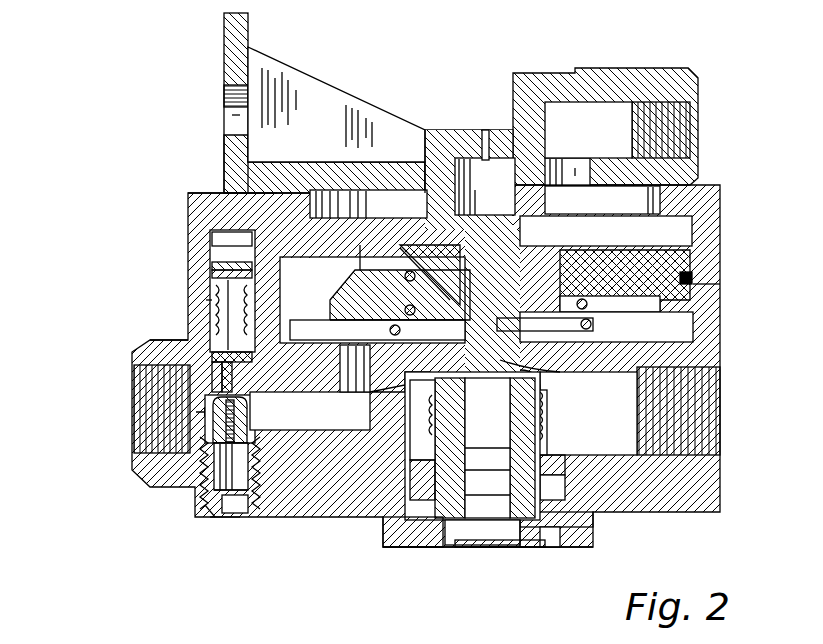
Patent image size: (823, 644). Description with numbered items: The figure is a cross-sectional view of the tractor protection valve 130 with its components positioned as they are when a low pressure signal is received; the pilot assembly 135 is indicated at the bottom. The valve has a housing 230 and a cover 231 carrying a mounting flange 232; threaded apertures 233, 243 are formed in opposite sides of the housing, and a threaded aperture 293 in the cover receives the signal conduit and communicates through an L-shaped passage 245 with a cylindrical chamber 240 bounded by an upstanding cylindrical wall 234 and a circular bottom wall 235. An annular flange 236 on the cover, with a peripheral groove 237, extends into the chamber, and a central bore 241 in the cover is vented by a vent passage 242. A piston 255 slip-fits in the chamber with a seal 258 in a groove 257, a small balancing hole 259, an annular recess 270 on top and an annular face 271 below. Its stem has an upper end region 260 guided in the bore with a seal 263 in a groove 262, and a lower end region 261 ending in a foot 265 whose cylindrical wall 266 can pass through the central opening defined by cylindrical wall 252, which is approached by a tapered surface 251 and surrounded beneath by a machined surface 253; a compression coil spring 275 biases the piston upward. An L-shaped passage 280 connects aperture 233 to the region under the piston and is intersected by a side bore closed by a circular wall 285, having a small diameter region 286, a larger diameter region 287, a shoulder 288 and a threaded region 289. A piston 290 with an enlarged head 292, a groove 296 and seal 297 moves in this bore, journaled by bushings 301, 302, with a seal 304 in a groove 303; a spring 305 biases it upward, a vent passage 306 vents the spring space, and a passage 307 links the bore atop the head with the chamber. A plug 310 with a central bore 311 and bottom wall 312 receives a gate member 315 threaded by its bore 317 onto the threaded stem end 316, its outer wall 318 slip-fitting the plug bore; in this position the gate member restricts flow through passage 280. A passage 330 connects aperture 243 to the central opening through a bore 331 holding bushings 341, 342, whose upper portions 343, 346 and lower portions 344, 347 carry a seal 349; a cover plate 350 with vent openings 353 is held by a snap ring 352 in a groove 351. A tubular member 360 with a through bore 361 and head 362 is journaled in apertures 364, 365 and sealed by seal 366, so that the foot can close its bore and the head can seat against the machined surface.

The tractor protection valve 130 is at (664, 36).
The pilot valve assembly 135 is at (486, 575).
The housing 230 is at (283, 517).
The cover 231 is at (440, 126).
The valve mounting flange 232 is at (236, 56).
The threaded aperture 233 is at (142, 455).
The upstanding cylindrical wall 234 is at (290, 322).
The circular bottom wall 235 is at (397, 327).
The annular flange 236 is at (656, 203).
The peripheral groove 237 is at (278, 192).
The cylindrical chamber 240 is at (406, 214).
The cylindrical bore 241 is at (478, 172).
The vent passage 242 is at (485, 130).
The threaded aperture 243 is at (700, 452).
The L-shaped passage 245 is at (606, 139).
The tapered surface 251 is at (592, 324).
The cylindrical wall 252 is at (565, 392).
The annular machined surface 253 is at (570, 372).
The piston 255 is at (616, 243).
The peripheral groove 257 is at (694, 276).
The resilient seal 258 is at (708, 286).
The small diameter hole 259 is at (395, 248).
The upper stem end region 260 is at (468, 258).
The lower stem end region 261 is at (395, 352).
The peripheral groove 262 is at (528, 240).
The resilient seal 263 is at (480, 192).
The foot 265 is at (415, 360).
The cylindrical peripheral wall 266 is at (560, 398).
The annular recess 270 is at (340, 243).
The annular face 271 is at (375, 300).
The compression coil spring 275 is at (588, 298).
The L-shaped passage 280 is at (356, 421).
The circular wall 285 is at (200, 220).
The small diameter region 286 is at (212, 240).
The larger diameter region 287 is at (215, 358).
The shoulder 288 is at (255, 360).
The threaded lower bore region 289 is at (218, 490).
The piston 290 is at (215, 250).
The enlarged diameter head 292 is at (208, 296).
The threaded aperture 293 is at (678, 152).
The peripheral groove 296 is at (214, 278).
The resilient seal 297 is at (214, 266).
The upper bushing 301 is at (182, 342).
The lower bushing 302 is at (248, 394).
The groove 303 is at (215, 380).
The resilient seal 304 is at (228, 395).
The compression coil spring 305 is at (225, 330).
The vent passage 306 is at (215, 310).
The passage 307 is at (285, 236).
The plug 310 is at (222, 520).
The central bore 311 is at (210, 512).
The circular bottom wall 312 is at (232, 516).
The gate member 315 is at (198, 412).
The threaded stem end region 316 is at (247, 418).
The threaded central bore 317 is at (258, 468).
The cylindrical outer wall 318 is at (210, 455).
The passage 330 is at (604, 410).
The bore 331 is at (420, 548).
The upper bushing 341 is at (566, 463).
The lower bushing 342 is at (566, 490).
The axially extending upper portion 343 is at (548, 432).
The radially extending lower portion 344 is at (412, 476).
The upper portion 346 is at (487, 448).
The lower portion 347 is at (482, 530).
The annular seal 349 is at (383, 520).
The circular cover plate 350 is at (435, 548).
The groove 351 is at (593, 530).
The snap ring 352 is at (560, 545).
The vent openings 353 is at (478, 547).
The tubular member 360 is at (522, 545).
The through bore 361 is at (487, 500).
The large diameter head 362 is at (414, 444).
The central aperture 364 is at (472, 446).
The central aperture 365 is at (487, 475).
The annular seal 366 is at (487, 452).